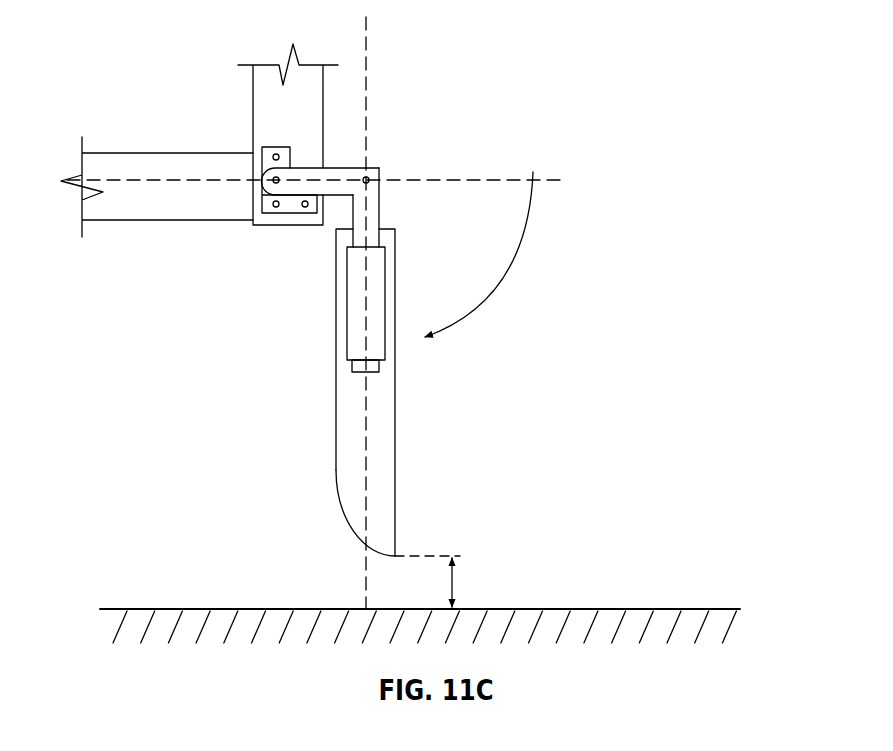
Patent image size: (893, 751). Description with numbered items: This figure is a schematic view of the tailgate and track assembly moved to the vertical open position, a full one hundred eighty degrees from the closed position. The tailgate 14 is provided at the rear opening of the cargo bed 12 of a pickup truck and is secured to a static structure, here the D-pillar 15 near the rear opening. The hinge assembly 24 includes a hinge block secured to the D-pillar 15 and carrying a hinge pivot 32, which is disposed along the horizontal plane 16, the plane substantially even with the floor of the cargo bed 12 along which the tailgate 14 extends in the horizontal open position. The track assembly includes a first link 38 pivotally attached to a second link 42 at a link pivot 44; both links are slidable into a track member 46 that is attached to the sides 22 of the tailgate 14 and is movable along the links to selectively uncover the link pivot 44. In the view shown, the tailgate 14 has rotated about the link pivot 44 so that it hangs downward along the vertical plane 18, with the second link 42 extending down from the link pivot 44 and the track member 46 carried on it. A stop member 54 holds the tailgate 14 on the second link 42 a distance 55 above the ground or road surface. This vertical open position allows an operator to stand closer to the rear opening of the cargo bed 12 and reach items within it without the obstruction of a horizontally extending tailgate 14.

The cargo bed 12 is at (166, 151).
The tailgate 14 is at (400, 408).
The D-pillar 15 is at (268, 98).
The horizontal plane 16 is at (542, 180).
The vertical plane 18 is at (366, 42).
The sides of the tailgate 22 is at (352, 487).
The hinge assembly 24 is at (250, 207).
The hinge pivot 32 is at (279, 188).
The first link 38 is at (327, 173).
The second link 42 is at (372, 222).
The link pivot 44 is at (370, 175).
The track member 46 is at (352, 328).
The stop member 54 is at (358, 384).
The distance 55 is at (457, 582).